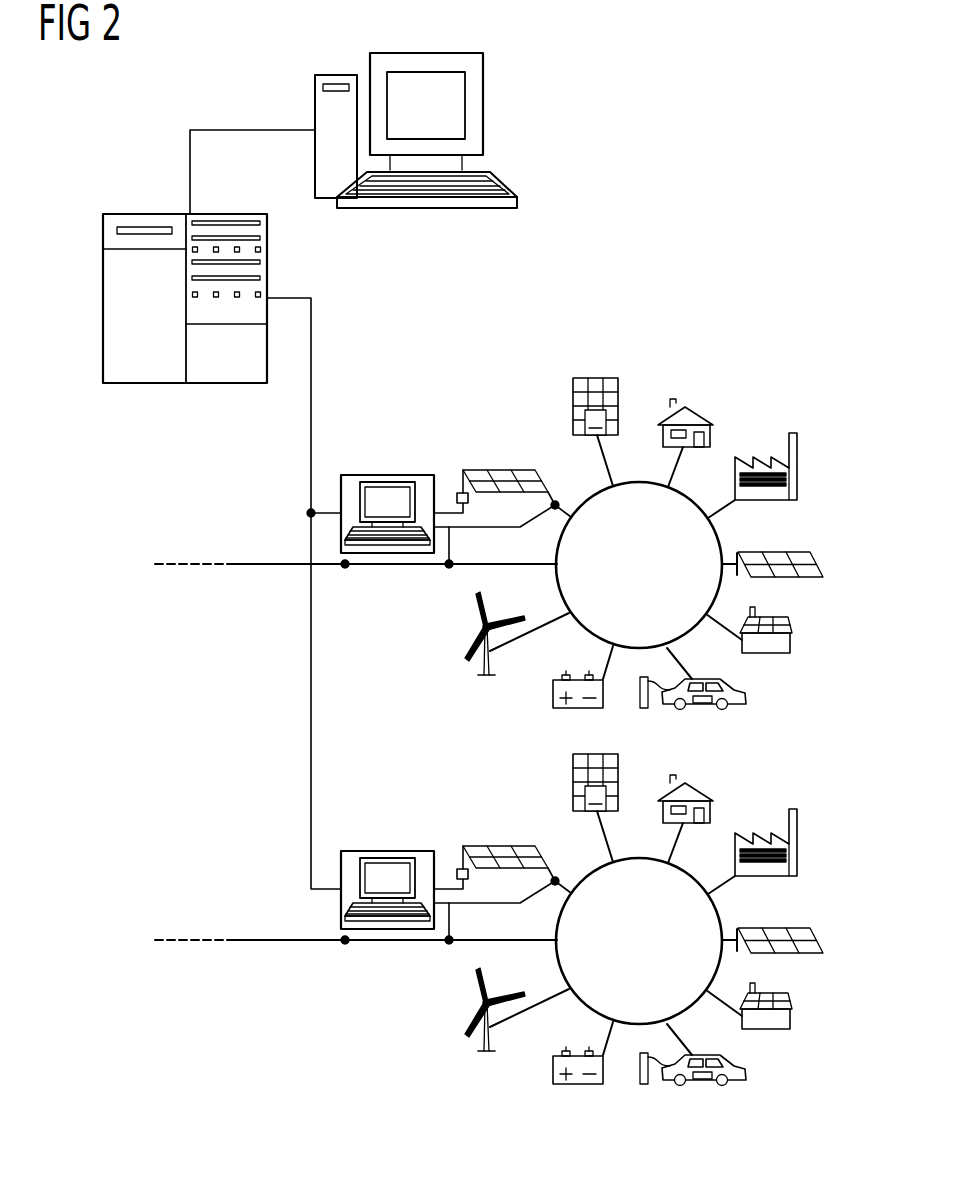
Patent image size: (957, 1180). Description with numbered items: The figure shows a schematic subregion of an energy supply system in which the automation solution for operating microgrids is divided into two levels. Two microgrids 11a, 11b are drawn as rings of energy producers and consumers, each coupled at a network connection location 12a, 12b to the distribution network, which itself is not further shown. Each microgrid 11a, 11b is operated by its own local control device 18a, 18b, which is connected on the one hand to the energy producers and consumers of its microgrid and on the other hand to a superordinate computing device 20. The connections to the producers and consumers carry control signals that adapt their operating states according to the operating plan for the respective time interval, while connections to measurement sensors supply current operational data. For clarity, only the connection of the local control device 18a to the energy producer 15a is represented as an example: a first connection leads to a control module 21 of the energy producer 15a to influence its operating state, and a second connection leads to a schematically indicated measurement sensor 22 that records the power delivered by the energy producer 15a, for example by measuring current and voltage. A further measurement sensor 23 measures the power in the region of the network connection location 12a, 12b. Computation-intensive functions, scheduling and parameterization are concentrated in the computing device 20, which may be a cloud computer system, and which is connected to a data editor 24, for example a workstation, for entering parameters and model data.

The microgrid 11a is at (824, 510).
The microgrid 11b is at (824, 885).
The network connection location 12a is at (345, 568).
The network connection location 12b is at (345, 944).
The energy producer 15a is at (501, 468).
The local control device 18a is at (385, 475).
The local control device 18b is at (385, 851).
The superordinate computing device 20 is at (152, 383).
The control module 21 is at (463, 490).
The measurement sensor 22 is at (557, 503).
The further measurement sensor 23 is at (449, 568).
The data editor 24 is at (483, 97).